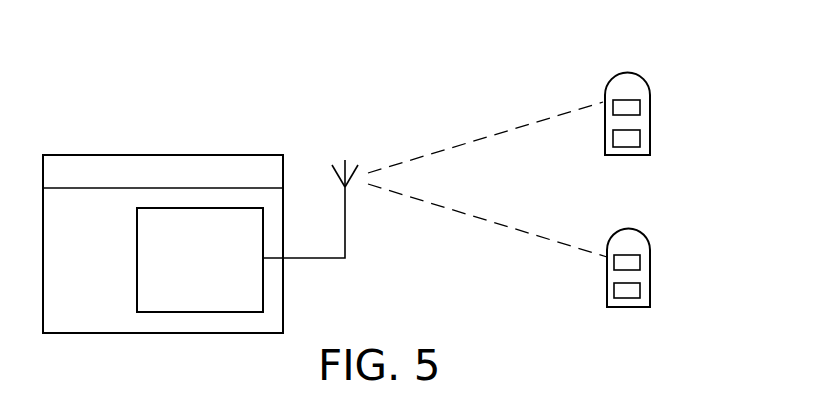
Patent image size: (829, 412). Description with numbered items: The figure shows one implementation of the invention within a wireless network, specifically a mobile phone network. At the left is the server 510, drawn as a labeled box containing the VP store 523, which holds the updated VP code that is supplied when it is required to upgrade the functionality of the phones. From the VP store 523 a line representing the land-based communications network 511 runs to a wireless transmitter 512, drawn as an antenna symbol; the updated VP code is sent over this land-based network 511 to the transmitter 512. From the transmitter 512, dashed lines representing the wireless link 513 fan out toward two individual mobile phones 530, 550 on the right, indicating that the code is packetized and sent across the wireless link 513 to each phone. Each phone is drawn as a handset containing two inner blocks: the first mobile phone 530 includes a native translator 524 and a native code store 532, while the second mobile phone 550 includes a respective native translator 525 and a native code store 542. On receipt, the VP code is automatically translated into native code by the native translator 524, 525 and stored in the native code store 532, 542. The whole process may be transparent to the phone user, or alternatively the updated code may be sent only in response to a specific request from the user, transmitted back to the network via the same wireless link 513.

The server 510 is at (75, 333).
The VP store 523 is at (215, 313).
The land-based communications network 511 is at (347, 238).
The wireless transmitter 512 is at (331, 167).
The wireless link 513 is at (486, 224).
The mobile phone 530 is at (612, 79).
The native translator 524 is at (641, 104).
The native code store 532 is at (641, 138).
The mobile phone 550 is at (612, 232).
The native translator 525 is at (641, 262).
The native code store 542 is at (641, 292).